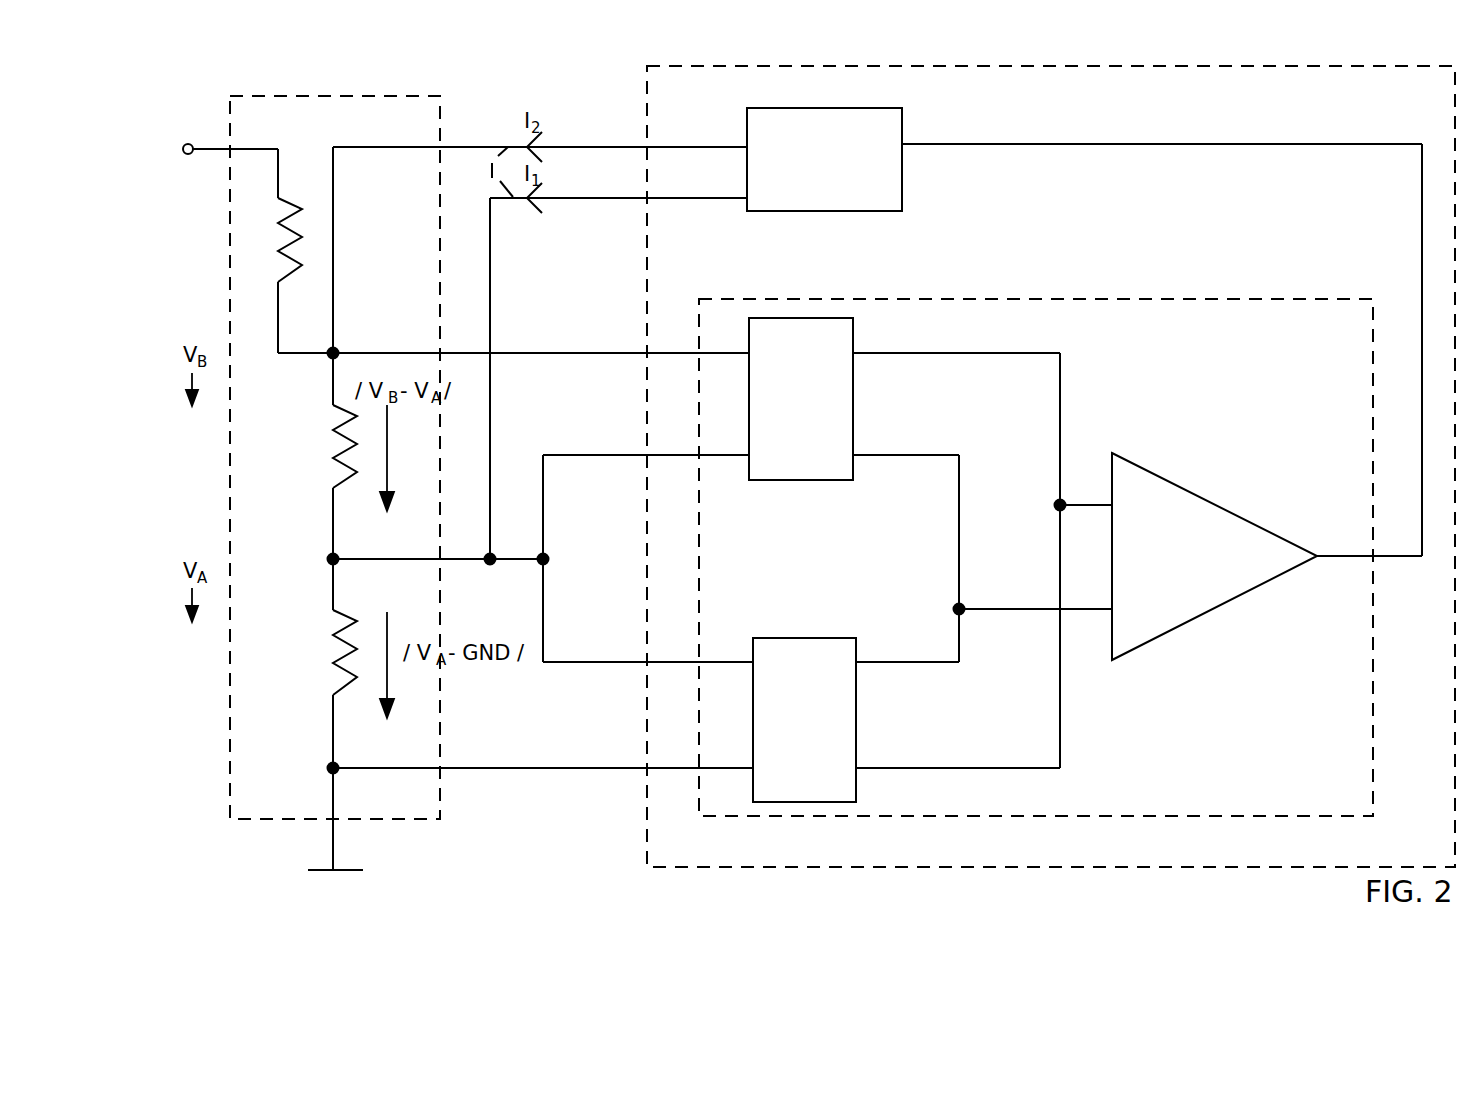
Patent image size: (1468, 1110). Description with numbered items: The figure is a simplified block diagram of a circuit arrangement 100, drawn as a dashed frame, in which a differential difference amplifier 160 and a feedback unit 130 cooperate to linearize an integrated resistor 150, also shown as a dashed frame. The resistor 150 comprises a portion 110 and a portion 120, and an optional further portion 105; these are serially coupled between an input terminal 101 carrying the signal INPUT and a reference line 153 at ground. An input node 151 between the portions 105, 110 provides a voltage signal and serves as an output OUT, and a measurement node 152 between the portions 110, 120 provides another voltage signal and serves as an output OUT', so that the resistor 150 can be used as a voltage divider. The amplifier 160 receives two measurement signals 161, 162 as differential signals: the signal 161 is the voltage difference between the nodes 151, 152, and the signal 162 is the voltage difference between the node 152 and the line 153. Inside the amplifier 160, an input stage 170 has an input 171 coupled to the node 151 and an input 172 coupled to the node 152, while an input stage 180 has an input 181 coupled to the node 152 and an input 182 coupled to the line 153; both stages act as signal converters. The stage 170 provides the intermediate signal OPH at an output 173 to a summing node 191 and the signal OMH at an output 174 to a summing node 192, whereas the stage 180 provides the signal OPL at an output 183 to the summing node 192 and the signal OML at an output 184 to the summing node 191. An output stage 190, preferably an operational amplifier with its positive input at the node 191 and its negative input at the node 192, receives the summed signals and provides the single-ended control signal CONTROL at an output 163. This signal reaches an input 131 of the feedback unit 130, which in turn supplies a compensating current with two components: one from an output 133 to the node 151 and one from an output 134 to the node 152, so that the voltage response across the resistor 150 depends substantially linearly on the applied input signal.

The circuit arrangement 100 is at (1428, 98).
The input terminal 101 is at (185, 146).
The portion 105 is at (278, 242).
The portion 110 is at (333, 448).
The portion 120 is at (333, 653).
The feedback unit 130 is at (893, 138).
The input 131 is at (904, 143).
The output 133 is at (746, 145).
The output 134 is at (746, 197).
The integrated resistor 150 is at (433, 125).
The input node 151 is at (330, 351).
The measurement node 152 is at (330, 557).
The reference line 153 is at (318, 872).
The differential difference amplifier 160 is at (1354, 329).
The measurement signal 161 is at (577, 353).
The measurement signal 162 is at (582, 662).
The output 163 is at (1319, 553).
The input stage 170 is at (846, 345).
The input 171 is at (748, 352).
The input 172 is at (748, 454).
The output 173 is at (854, 352).
The output 174 is at (854, 454).
The input stage 180 is at (848, 667).
The input 181 is at (752, 661).
The input 182 is at (752, 766).
The output 183 is at (857, 661).
The output 184 is at (857, 767).
The output stage 190 is at (1173, 523).
The summing node 191 is at (1059, 504).
The summing node 192 is at (958, 607).